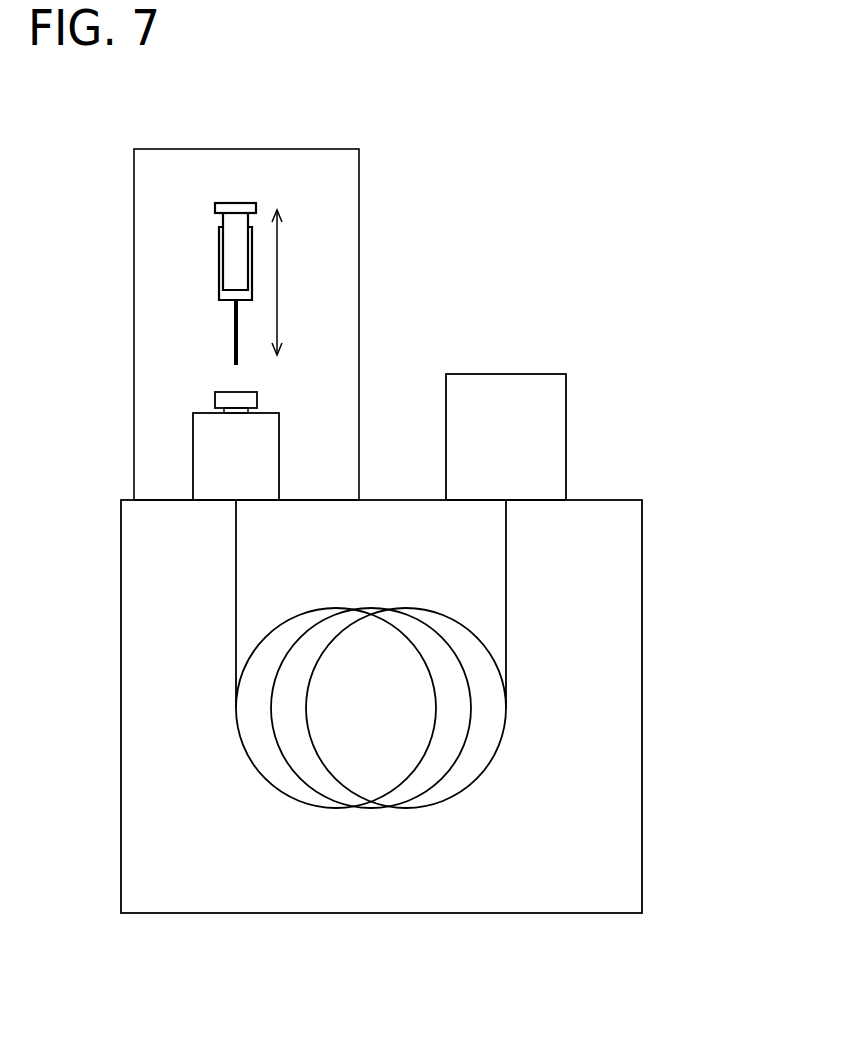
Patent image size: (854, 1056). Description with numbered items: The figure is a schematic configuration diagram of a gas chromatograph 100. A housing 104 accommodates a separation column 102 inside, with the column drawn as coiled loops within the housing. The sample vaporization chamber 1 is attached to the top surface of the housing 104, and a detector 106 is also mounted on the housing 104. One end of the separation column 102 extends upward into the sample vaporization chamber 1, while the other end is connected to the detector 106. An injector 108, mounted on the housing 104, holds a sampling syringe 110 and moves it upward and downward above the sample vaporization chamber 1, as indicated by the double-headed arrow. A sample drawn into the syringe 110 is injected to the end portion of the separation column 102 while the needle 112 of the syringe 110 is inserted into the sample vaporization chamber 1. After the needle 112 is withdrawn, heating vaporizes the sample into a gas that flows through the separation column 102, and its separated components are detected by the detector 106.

The sample vaporization chamber 1 is at (193, 457).
The gas chromatograph 100 is at (632, 229).
The separation column 102 is at (236, 625).
The housing 104 is at (642, 629).
The detector 106 is at (566, 423).
The injector 108 is at (336, 149).
The syringe 110 is at (220, 263).
The needle 112 is at (233, 333).